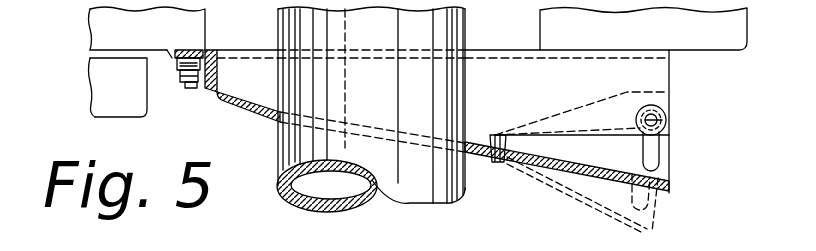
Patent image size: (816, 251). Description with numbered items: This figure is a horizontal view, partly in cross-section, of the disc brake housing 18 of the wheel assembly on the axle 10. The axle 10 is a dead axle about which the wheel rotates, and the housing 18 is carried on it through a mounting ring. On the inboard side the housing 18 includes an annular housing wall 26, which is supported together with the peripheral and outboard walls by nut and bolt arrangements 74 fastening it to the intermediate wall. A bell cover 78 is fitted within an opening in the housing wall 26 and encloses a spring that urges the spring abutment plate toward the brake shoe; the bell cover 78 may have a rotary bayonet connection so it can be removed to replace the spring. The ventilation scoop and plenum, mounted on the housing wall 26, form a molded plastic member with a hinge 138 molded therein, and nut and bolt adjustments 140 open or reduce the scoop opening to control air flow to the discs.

The axle 10 is at (278, 192).
The disc brake housing 18 is at (471, 150).
The annular housing wall 26 is at (715, 35).
The nut and bolt arrangements 74 is at (187, 90).
The bell cover 78 is at (96, 115).
The hinge 138 is at (490, 162).
The nut and bolt adjustments 140 is at (656, 120).